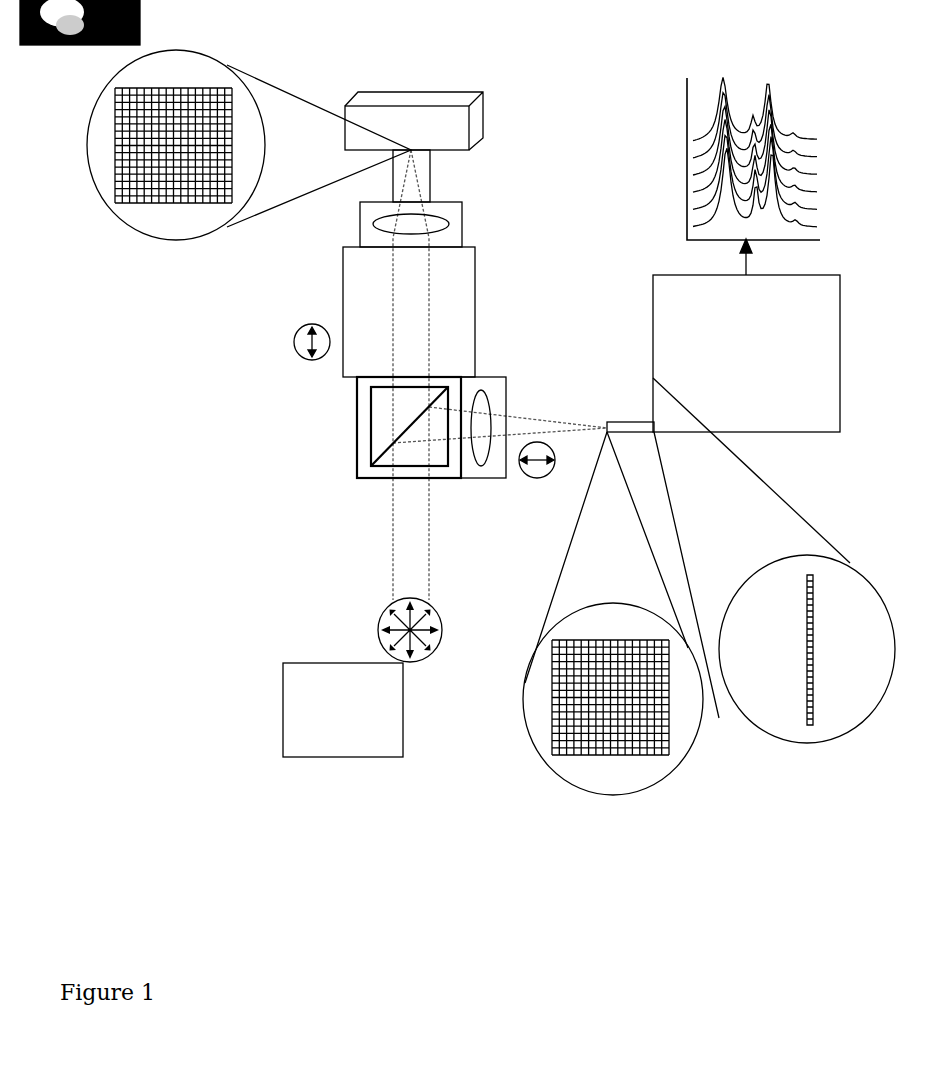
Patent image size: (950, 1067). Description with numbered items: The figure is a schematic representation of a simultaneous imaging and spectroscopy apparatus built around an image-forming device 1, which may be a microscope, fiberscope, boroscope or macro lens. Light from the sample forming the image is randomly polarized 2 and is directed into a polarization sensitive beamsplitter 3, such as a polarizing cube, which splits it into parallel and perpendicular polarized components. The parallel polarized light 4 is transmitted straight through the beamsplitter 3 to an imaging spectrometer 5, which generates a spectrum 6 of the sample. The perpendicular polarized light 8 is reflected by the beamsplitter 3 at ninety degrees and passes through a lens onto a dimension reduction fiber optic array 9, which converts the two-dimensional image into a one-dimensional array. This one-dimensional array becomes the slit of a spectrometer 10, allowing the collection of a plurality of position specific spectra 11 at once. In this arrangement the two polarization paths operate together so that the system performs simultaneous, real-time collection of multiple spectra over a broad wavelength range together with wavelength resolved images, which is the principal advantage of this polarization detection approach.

The image-forming device 1 is at (336, 701).
The randomly polarized light 2 is at (426, 630).
The polarization sensitive beamsplitter 3 is at (390, 427).
The parallel polarized light 4 is at (297, 342).
The imaging spectrometer 5 is at (409, 289).
The spectrum 6 is at (251, 120).
The perpendicular polarized light 8 is at (508, 444).
The dimension reduction fiber optic array 9 is at (709, 586).
The spectrometer 10 is at (746, 335).
The position specific spectra 11 is at (731, 158).